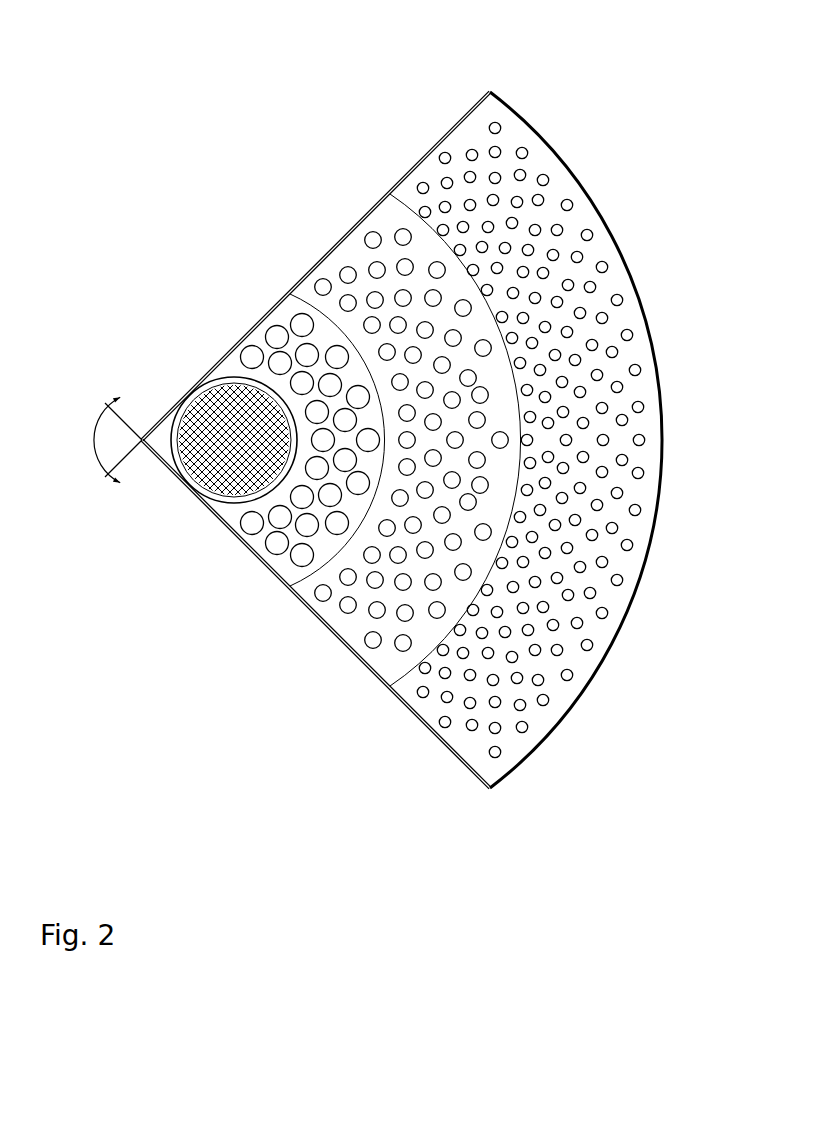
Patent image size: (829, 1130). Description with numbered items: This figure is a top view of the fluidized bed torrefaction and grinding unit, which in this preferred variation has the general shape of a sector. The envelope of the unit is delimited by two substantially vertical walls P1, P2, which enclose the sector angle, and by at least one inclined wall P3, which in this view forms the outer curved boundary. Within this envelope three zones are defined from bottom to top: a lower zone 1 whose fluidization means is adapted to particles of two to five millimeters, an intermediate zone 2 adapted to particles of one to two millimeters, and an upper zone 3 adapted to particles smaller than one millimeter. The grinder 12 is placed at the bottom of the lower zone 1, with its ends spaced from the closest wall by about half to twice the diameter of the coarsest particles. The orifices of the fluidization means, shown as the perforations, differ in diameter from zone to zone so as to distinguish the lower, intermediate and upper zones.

The lower zone 1 is at (93, 391).
The intermediate zone 2 is at (335, 149).
The upper zone 3 is at (437, 47).
The substantially vertical wall P1 is at (407, 177).
The substantially vertical wall P2 is at (357, 655).
The inclined wall P3 is at (638, 296).
The grinder 12 is at (205, 497).